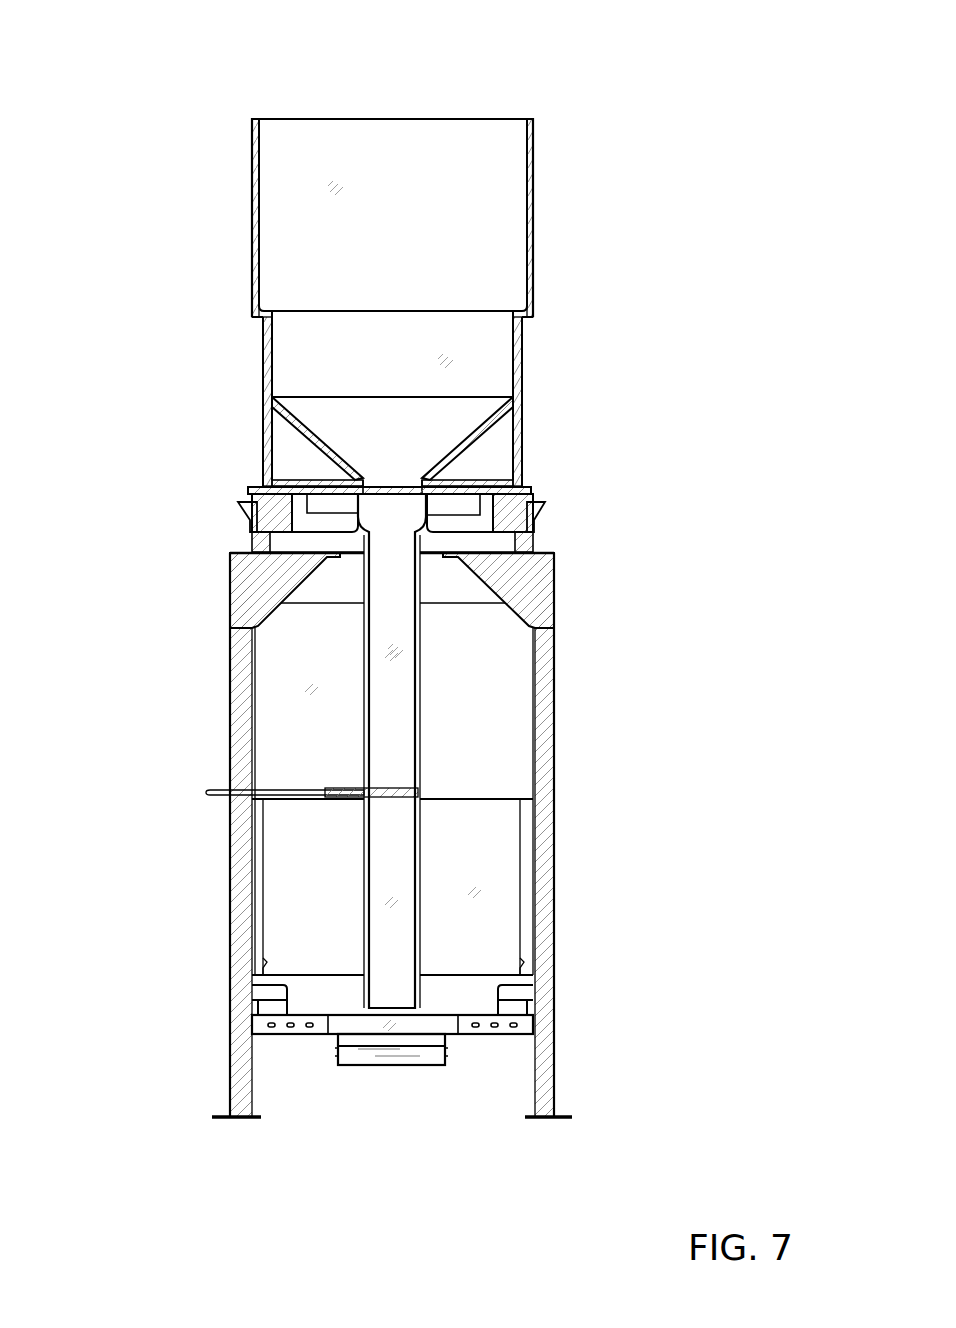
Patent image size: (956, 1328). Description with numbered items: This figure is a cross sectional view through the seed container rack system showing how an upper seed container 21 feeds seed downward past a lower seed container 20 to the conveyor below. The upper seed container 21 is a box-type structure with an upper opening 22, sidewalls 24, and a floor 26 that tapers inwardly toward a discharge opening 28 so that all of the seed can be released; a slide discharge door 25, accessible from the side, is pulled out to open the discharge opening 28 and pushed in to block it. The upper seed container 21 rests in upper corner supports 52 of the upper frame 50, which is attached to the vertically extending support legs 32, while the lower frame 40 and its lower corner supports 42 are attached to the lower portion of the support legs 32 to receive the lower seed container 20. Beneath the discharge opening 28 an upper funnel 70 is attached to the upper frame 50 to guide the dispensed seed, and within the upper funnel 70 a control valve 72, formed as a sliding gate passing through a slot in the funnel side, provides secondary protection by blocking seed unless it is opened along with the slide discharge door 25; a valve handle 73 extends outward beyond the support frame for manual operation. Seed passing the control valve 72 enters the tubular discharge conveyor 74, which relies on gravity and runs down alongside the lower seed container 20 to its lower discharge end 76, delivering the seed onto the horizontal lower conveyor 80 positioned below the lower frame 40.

The lower seed container 20 is at (492, 738).
The upper seed container 21 is at (250, 238).
The upper opening 22 is at (470, 119).
The sidewalls 24 is at (533, 268).
The slide discharge door 25 is at (250, 494).
The floor 26 is at (455, 440).
The discharge opening 28 is at (378, 486).
The support legs 32 is at (230, 745).
The lower frame 40 is at (480, 1045).
The lower corner supports 42 is at (527, 977).
The upper frame 50 is at (545, 549).
The upper corner supports 52 is at (538, 500).
The upper funnel 70 is at (377, 513).
The control valve 72 is at (360, 788).
The valve handle 73 is at (265, 790).
The discharge conveyor 74 is at (423, 588).
The lower discharge end 76 is at (415, 1000).
The lower conveyor 80 is at (395, 1066).